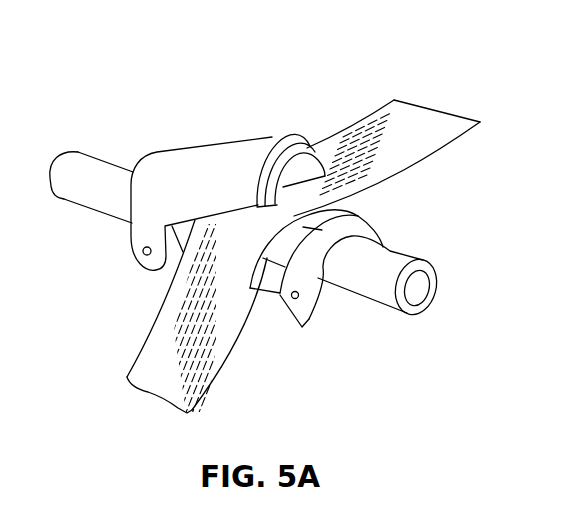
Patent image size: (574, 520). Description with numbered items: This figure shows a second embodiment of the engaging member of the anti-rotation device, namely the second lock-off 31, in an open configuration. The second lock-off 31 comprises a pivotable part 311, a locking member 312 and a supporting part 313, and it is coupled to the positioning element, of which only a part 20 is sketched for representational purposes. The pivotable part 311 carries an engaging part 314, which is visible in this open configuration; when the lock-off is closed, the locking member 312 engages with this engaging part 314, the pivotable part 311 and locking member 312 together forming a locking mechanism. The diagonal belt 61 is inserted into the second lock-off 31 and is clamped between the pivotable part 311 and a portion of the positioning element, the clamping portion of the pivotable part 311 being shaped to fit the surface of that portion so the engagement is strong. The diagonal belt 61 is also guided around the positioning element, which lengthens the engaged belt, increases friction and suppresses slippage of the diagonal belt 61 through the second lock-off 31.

The second lock-off 31 is at (158, 62).
The part of the positioning element 20 is at (67, 188).
The pivotable part 311 is at (160, 175).
The engaging part 314 is at (288, 142).
The diagonal belt 61 is at (417, 115).
The locking member 312 is at (313, 263).
The supporting part 313 is at (263, 283).